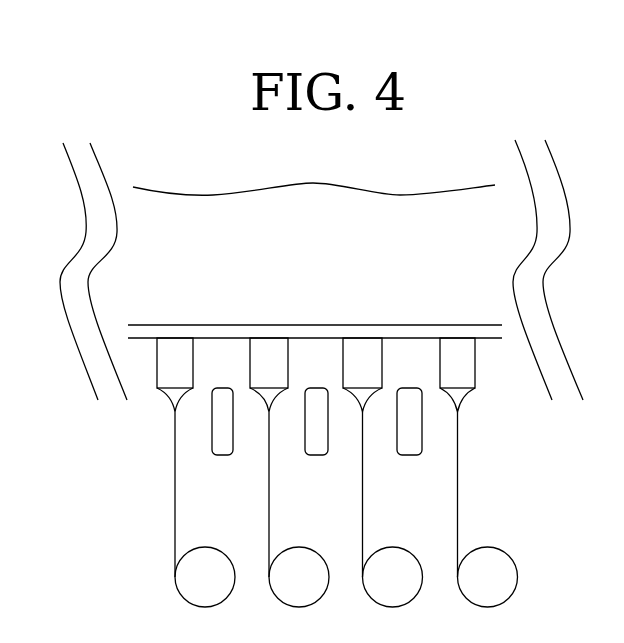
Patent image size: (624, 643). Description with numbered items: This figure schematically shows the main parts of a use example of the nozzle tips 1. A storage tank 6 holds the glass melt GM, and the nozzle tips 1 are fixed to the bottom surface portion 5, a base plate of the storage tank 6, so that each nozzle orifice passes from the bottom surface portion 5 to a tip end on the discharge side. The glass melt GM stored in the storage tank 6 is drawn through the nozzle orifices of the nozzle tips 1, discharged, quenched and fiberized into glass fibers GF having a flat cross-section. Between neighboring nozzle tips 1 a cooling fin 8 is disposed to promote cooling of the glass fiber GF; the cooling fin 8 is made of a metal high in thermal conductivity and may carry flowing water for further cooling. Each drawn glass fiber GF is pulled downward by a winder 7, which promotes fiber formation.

The nozzle tip 1 is at (168, 371).
The bottom surface portion 5 is at (436, 337).
The storage tank 6 is at (168, 241).
The winder 7 is at (198, 586).
The cooling fin 8 is at (216, 430).
The glass melt GM is at (314, 232).
The glass fiber GF is at (175, 480).